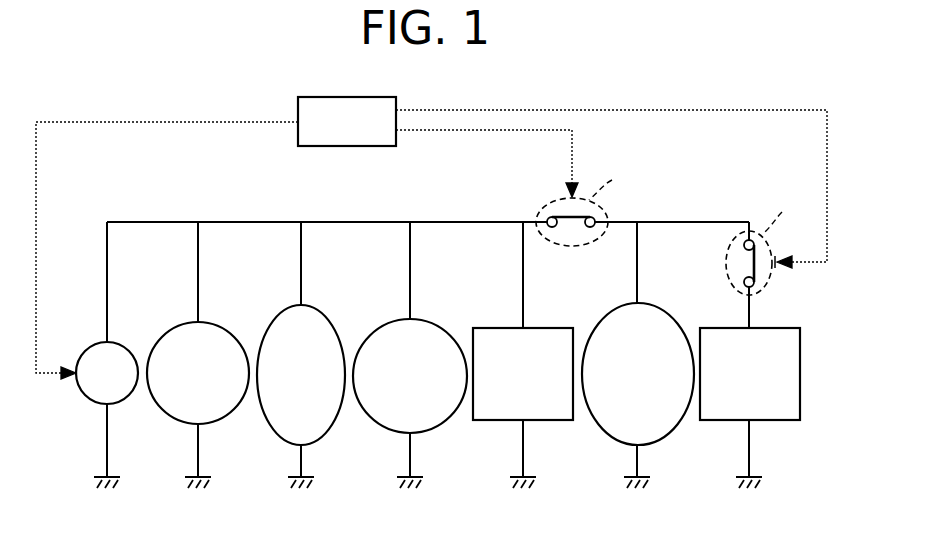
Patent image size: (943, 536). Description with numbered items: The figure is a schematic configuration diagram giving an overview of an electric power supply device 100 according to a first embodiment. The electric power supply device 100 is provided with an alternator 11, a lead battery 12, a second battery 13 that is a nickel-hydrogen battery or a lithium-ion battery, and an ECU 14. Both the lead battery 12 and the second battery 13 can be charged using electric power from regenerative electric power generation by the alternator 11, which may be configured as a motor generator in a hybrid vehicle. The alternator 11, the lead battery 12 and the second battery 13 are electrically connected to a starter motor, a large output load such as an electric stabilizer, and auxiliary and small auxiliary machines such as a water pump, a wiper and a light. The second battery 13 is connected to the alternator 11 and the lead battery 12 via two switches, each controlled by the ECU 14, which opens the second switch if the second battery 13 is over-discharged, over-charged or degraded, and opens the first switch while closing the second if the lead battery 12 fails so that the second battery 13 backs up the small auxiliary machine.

The electric power supply device 100 is at (105, 88).
The ECU 14 is at (380, 97).
The alternator 11 is at (92, 345).
The lead battery 12 is at (545, 328).
The second battery 13 is at (780, 328).